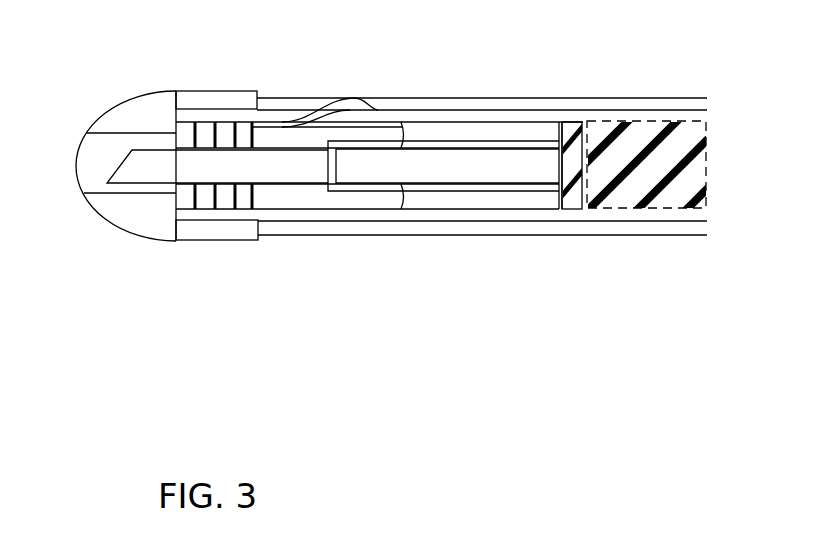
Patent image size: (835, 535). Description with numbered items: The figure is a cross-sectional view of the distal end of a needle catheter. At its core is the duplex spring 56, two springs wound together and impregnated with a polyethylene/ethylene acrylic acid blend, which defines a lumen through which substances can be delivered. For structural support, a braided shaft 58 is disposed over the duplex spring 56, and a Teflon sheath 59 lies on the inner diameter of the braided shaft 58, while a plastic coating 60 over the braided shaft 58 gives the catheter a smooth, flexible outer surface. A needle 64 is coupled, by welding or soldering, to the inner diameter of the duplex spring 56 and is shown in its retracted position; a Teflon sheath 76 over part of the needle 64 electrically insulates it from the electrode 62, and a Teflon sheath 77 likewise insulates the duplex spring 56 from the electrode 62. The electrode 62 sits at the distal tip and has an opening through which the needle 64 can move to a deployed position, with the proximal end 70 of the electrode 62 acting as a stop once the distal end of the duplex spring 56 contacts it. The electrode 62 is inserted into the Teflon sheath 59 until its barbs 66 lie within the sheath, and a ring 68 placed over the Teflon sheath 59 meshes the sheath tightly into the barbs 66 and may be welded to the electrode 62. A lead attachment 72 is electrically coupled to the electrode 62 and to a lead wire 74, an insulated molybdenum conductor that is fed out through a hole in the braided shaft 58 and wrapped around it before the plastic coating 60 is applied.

The duplex spring 56 is at (683, 166).
The braided shaft 58 is at (711, 111).
The Teflon sheath 59 is at (549, 118).
The plastic coating 60 is at (660, 92).
The electrode 62 is at (95, 97).
The needle 64 is at (93, 185).
The barbs 66 is at (189, 212).
The ring 68 is at (212, 87).
The proximal end 70 is at (398, 212).
The lead attachment 72 is at (285, 120).
The lead wire 74 is at (359, 96).
The Teflon sheath 76 is at (452, 194).
The Teflon sheath 77 is at (565, 200).